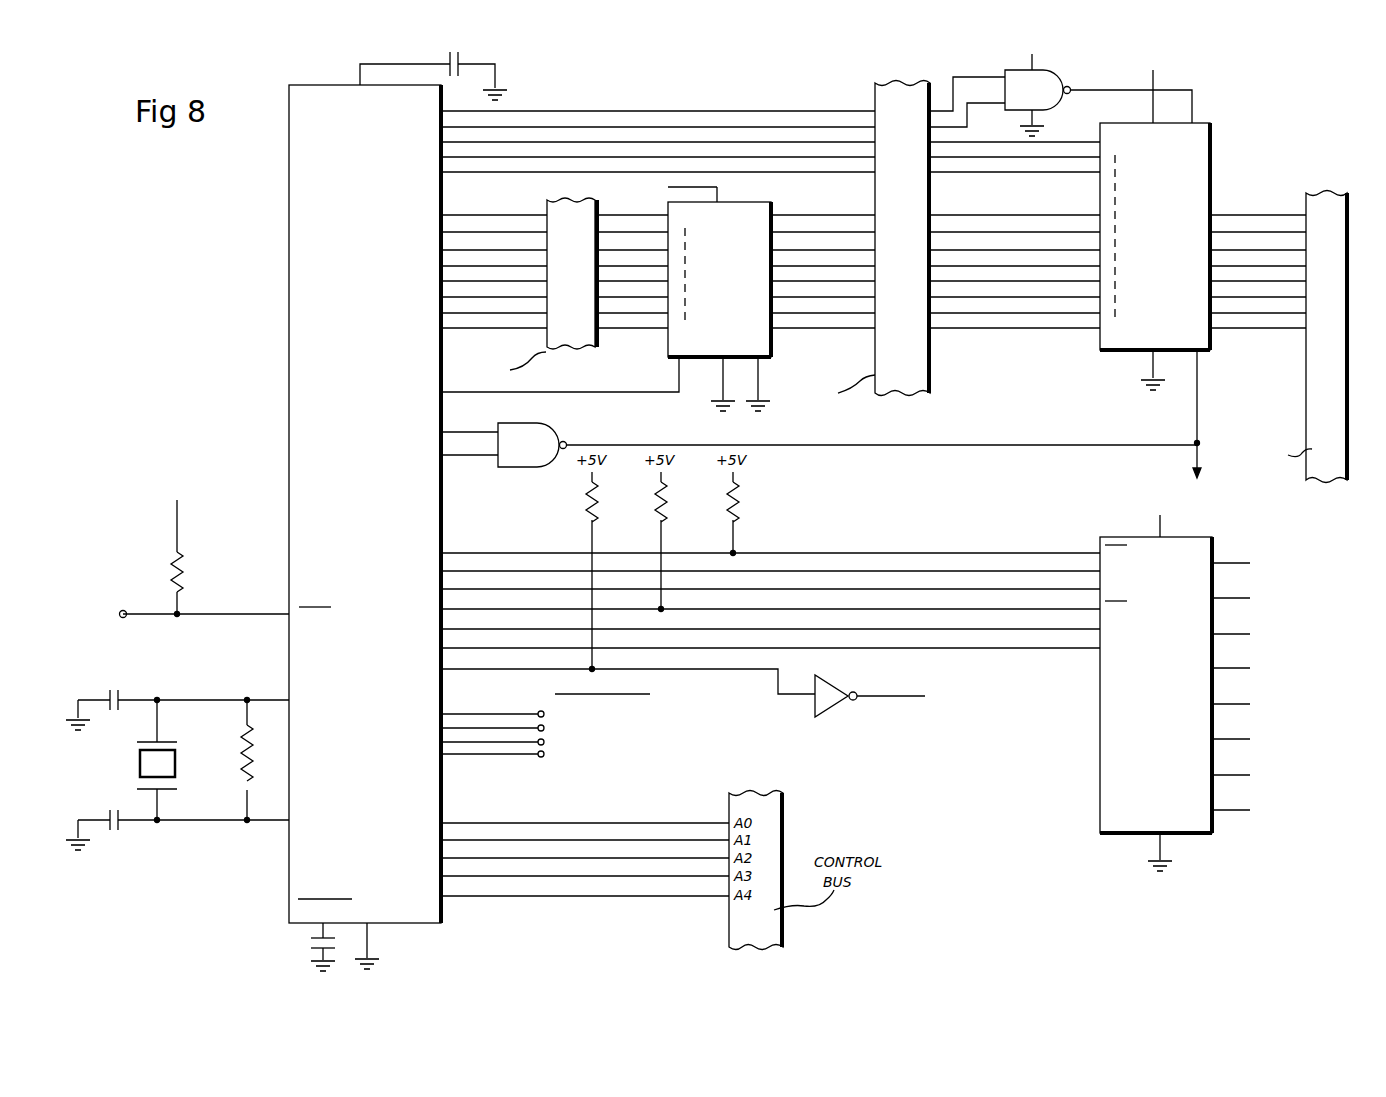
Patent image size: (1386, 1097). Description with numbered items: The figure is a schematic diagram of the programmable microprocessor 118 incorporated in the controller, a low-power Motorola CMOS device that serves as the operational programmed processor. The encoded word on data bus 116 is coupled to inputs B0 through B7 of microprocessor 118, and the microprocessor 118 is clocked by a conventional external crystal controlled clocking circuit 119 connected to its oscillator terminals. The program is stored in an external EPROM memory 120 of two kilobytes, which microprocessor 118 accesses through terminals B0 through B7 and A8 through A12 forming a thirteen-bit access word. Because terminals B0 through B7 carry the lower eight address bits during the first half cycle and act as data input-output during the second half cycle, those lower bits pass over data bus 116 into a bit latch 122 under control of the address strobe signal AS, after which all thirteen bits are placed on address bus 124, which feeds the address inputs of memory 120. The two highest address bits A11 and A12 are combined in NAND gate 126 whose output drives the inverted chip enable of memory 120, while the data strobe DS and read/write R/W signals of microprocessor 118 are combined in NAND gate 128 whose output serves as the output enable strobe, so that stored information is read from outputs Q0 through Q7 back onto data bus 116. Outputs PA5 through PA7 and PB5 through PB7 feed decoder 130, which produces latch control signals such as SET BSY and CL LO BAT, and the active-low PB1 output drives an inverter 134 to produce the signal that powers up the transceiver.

The data bus 116 is at (592, 347).
The microprocessor 118 is at (289, 312).
The crystal controlled clocking circuit 119 is at (196, 668).
The EPROM memory 120 is at (1202, 158).
The bit latch 122 is at (808, 192).
The address bus 124 is at (932, 372).
The NAND gate 126 is at (1055, 77).
The NAND gate 128 is at (535, 433).
The decoder 130 is at (1108, 777).
The inverter 134 is at (816, 706).